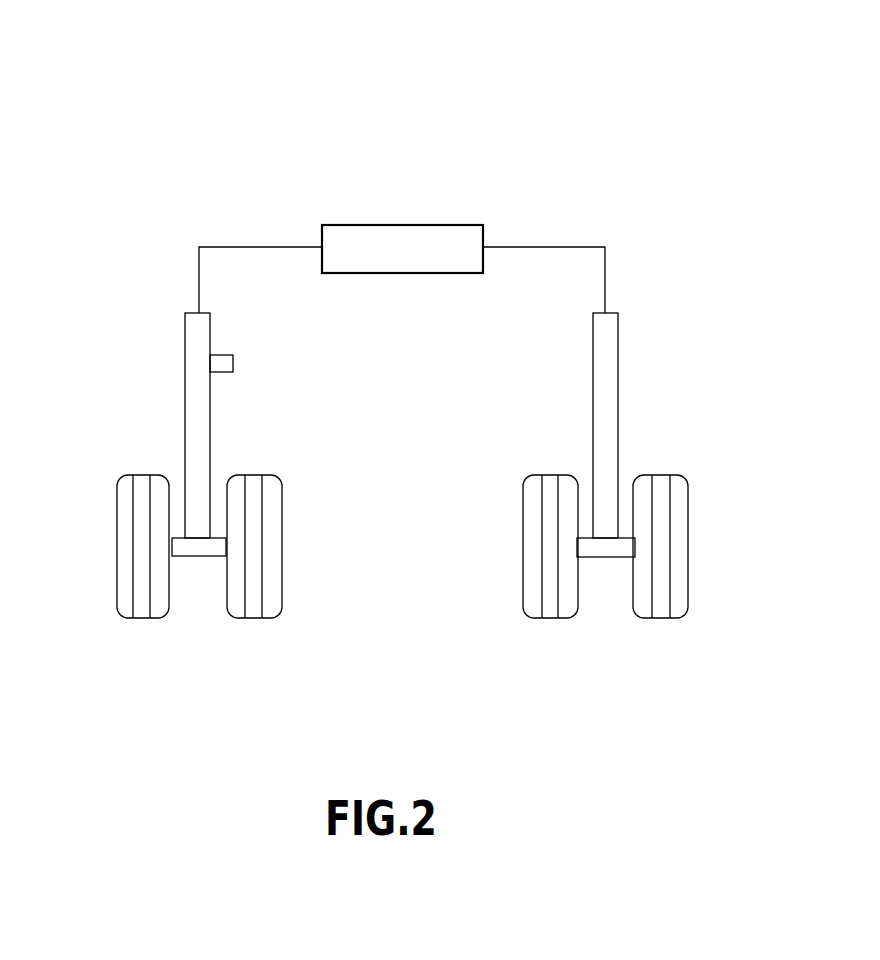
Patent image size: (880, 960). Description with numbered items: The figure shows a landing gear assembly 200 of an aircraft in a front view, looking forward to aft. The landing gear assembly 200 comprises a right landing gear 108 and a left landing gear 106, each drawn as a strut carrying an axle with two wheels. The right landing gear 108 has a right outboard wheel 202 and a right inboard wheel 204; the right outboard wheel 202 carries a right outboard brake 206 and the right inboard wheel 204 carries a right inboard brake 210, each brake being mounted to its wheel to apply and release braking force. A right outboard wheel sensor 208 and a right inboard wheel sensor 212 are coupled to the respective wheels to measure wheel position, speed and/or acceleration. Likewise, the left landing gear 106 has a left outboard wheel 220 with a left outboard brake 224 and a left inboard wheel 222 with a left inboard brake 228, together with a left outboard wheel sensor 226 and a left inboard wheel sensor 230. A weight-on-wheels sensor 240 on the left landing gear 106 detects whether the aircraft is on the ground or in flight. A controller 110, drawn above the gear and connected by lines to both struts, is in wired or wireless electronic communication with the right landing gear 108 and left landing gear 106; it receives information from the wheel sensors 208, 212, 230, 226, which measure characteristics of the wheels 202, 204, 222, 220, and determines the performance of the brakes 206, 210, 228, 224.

The landing gear assembly 200 is at (153, 94).
The controller 110 is at (462, 225).
The right landing gear 108 is at (110, 402).
The left landing gear 106 is at (541, 402).
The weight-on-wheels (WOW) sensor 240 is at (235, 363).
The right outboard brake 206 is at (172, 556).
The right inboard brake 210 is at (226, 556).
The right outboard (ROB) wheel sensor 208 is at (116, 557).
The right outboard wheel 202 is at (118, 612).
The right inboard (RIB) wheel sensor 212 is at (283, 540).
The right inboard wheel 204 is at (283, 610).
The left inboard brake 228 is at (578, 557).
The left outboard brake 224 is at (634, 557).
The left inboard (LIB) wheel sensor 230 is at (523, 559).
The left inboard wheel 222 is at (523, 612).
The left outboard (LOB) wheel sensor 226 is at (688, 540).
The left outboard wheel 220 is at (688, 610).